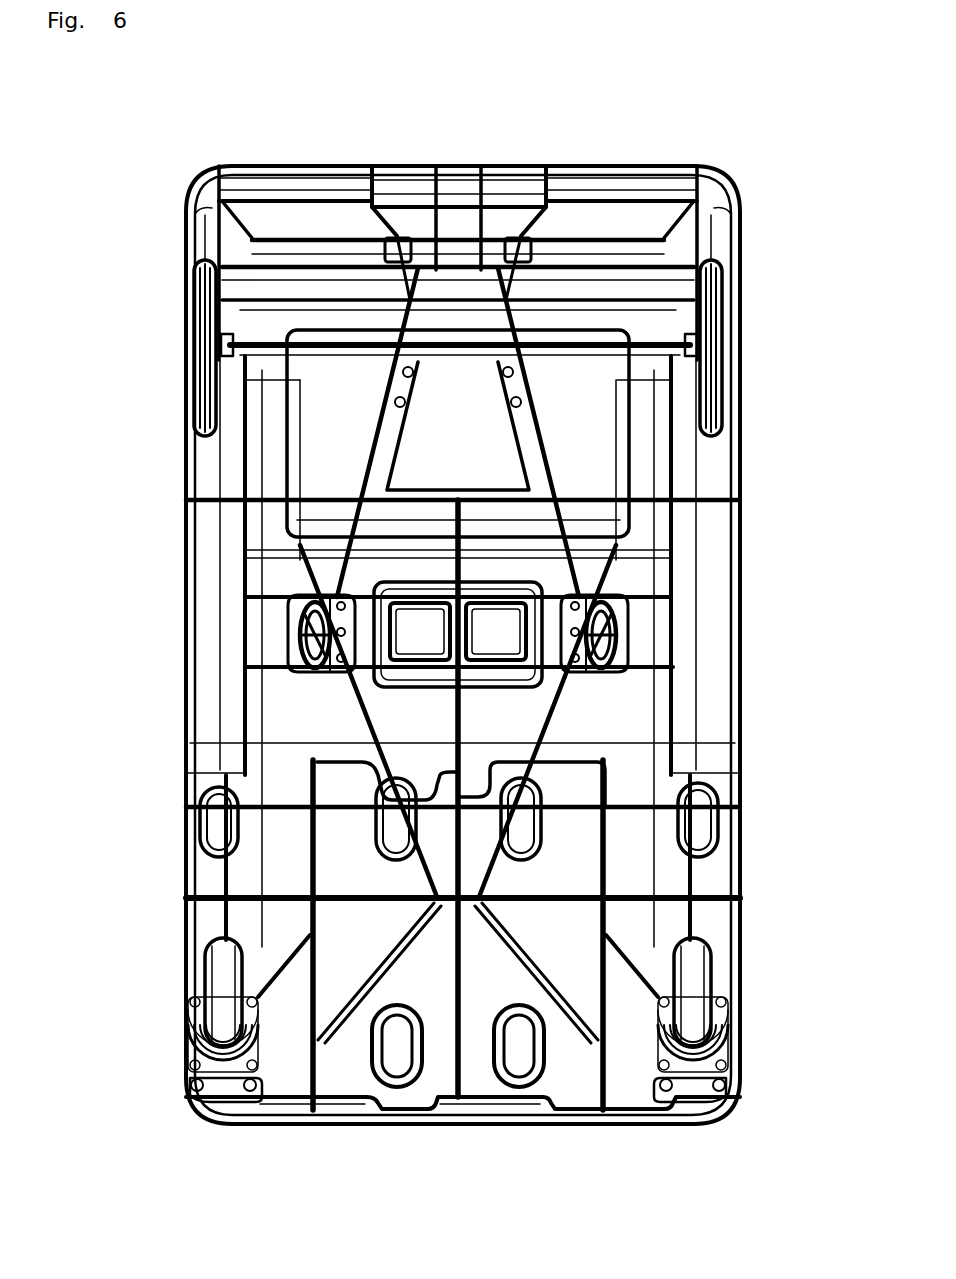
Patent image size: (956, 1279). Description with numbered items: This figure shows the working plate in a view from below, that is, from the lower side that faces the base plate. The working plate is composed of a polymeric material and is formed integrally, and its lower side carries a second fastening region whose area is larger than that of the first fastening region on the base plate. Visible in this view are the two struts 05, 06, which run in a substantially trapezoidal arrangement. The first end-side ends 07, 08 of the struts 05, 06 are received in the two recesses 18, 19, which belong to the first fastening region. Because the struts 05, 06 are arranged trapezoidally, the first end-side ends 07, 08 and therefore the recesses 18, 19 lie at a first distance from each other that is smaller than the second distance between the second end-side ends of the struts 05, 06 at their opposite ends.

The recess 19 is at (325, 605).
The recess 18 is at (595, 605).
The first end-side end 08 is at (325, 632).
The first end-side end 07 is at (592, 632).
The strut 06 is at (303, 655).
The strut 05 is at (613, 655).